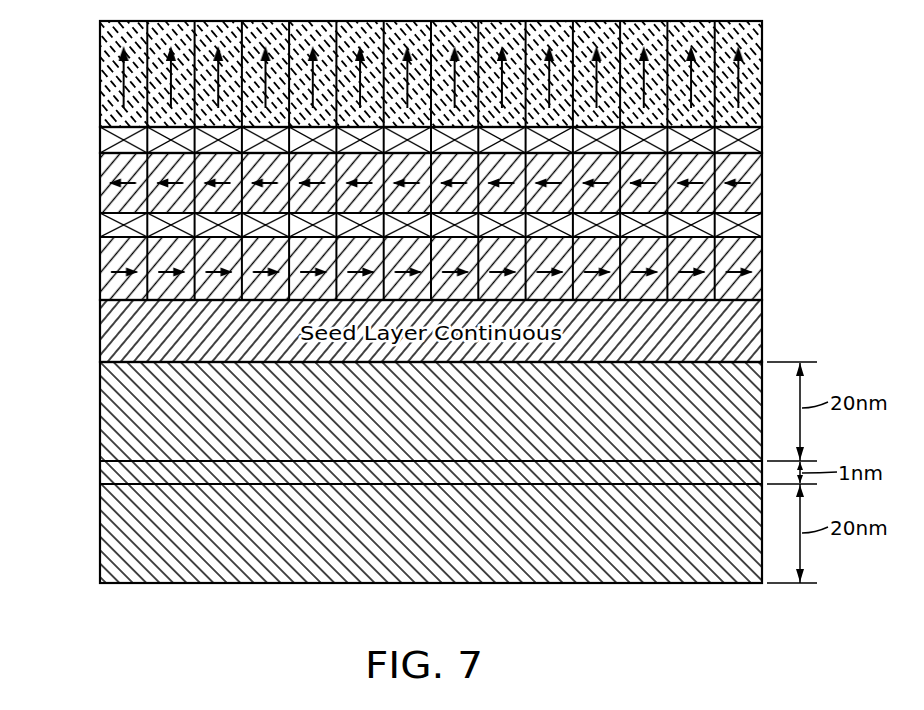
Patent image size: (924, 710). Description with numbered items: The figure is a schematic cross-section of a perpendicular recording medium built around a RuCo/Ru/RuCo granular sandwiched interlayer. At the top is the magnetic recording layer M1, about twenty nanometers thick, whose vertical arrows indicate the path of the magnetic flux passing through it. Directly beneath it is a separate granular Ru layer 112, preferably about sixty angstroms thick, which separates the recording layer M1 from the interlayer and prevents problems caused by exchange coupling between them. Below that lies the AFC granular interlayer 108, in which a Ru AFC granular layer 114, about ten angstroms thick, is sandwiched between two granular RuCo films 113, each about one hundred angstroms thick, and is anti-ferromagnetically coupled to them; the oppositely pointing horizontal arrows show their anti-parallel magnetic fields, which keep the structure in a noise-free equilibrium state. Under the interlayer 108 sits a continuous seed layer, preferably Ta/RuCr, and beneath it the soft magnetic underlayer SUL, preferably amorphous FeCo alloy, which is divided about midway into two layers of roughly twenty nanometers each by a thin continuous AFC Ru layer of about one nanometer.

The magnetic recording layer M1 is at (778, 80).
The separate granular Ru layer 112 is at (778, 138).
The granular RuCo films 113 is at (778, 185).
The Ru AFC granular layer 114 is at (778, 224).
The AFC granular interlayer 108 is at (84, 153).
The soft magnetic underlayer SUL is at (84, 363).